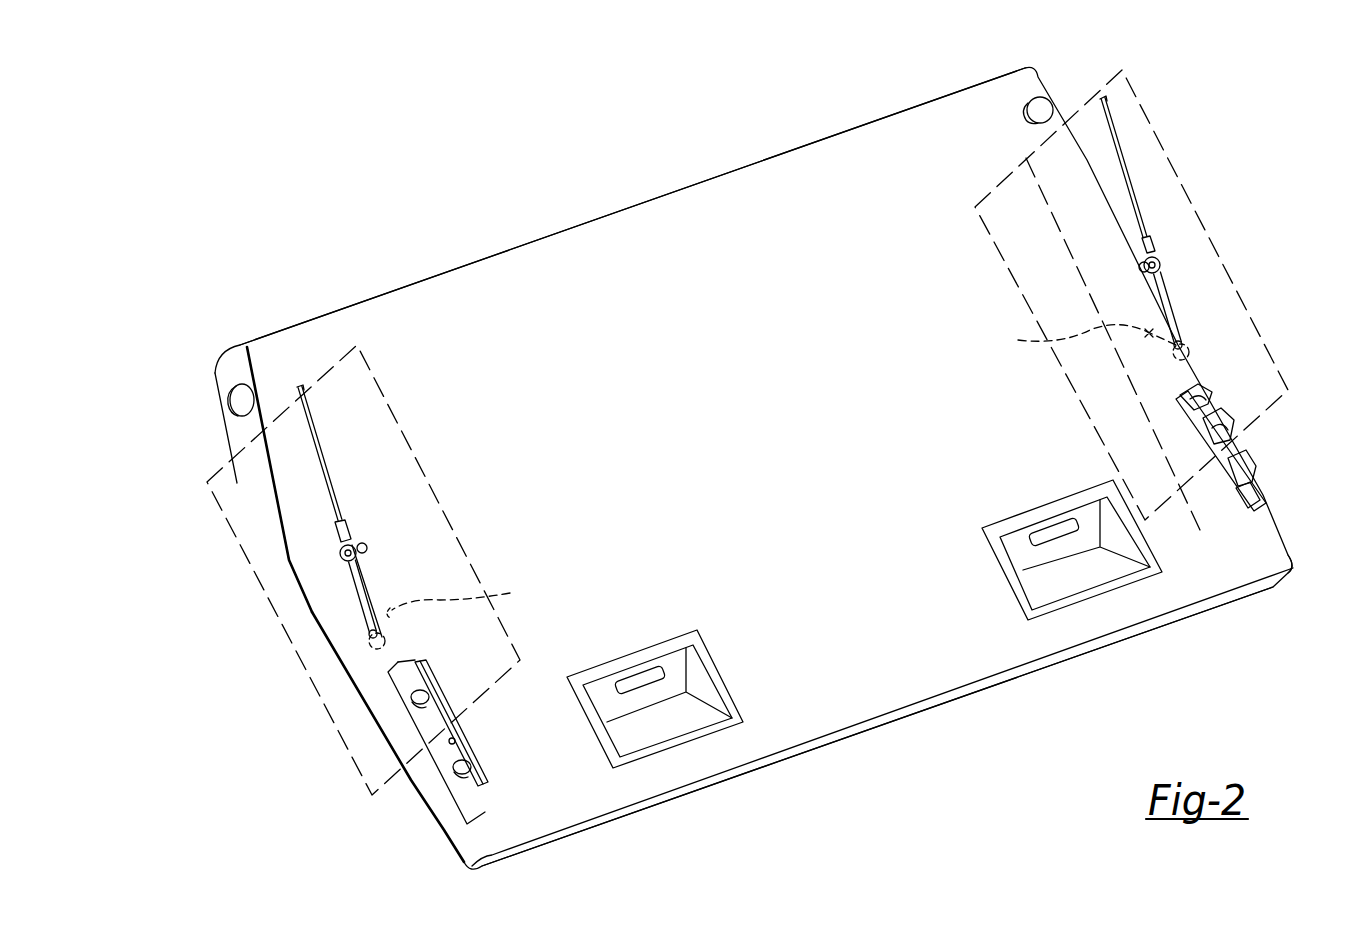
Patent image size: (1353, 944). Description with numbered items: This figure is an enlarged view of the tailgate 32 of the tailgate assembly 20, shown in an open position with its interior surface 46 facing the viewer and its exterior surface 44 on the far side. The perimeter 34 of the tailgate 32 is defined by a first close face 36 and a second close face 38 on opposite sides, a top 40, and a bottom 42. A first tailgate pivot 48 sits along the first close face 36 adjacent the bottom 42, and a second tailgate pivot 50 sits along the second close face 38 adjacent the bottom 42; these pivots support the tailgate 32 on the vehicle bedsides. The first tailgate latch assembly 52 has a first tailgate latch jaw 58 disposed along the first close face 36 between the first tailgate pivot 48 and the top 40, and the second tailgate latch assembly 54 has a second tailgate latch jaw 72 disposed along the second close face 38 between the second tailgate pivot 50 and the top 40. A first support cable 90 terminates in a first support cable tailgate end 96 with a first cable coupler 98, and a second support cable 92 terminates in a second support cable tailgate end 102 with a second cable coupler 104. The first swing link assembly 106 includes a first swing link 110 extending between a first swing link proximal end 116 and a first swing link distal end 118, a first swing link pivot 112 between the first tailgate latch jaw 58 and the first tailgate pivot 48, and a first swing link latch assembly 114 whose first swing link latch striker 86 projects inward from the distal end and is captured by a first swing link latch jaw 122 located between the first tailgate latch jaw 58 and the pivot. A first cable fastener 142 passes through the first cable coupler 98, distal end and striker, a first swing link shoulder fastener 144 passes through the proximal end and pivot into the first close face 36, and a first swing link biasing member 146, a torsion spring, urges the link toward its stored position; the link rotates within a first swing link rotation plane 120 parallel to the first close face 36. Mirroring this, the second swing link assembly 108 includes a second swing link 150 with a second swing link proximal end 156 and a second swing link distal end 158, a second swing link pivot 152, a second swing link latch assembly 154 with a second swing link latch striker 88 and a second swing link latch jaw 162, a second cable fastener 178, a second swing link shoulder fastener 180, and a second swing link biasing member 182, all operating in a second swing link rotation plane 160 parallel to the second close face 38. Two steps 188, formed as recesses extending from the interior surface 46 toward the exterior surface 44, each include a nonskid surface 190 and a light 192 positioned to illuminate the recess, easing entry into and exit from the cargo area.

The tailgate assembly 20 is at (374, 172).
The tailgate 32 is at (680, 818).
The perimeter 34 is at (1294, 577).
The first close face 36 is at (272, 468).
The second close face 38 is at (1057, 183).
The top 40 is at (903, 710).
The bottom 42 is at (462, 262).
The exterior surface 44 is at (378, 747).
The interior surface 46 is at (794, 282).
The first tailgate pivot 48 is at (224, 358).
The second tailgate pivot 50 is at (1027, 109).
The first tailgate latch assembly 52 is at (445, 796).
The second tailgate latch assembly 54 is at (1264, 468).
The first tailgate latch jaw 58 is at (470, 772).
The second tailgate latch jaw 72 is at (1245, 506).
The first swing link latch striker 86 is at (367, 551).
The second swing link latch striker 88 is at (1140, 268).
The first support cable 90 is at (318, 446).
The second support cable 92 is at (1124, 164).
The first support cable tailgate end 96 is at (345, 515).
The first cable coupler 98 is at (351, 538).
The second support cable tailgate end 102 is at (1152, 228).
The second cable coupler 104 is at (1152, 245).
The first swing link assembly 106 is at (395, 580).
The second swing link assembly 108 is at (1118, 355).
The first swing link 110 is at (360, 588).
The first swing link pivot 112 is at (383, 637).
The first swing link latch assembly 114 is at (402, 702).
The first swing link proximal end 116 is at (373, 632).
The first swing link distal end 118 is at (350, 567).
The first swing link rotation plane 120 is at (236, 513).
The first swing link latch jaw 122 is at (437, 708).
The first cable fastener 142 is at (341, 554).
The first swing link shoulder fastener 144 is at (385, 628).
The first swing link biasing member 146 is at (464, 598).
The second swing link 150 is at (1157, 288).
The second swing link pivot 152 is at (1170, 351).
The second swing link latch assembly 154 is at (1216, 390).
The second swing link proximal end 156 is at (1188, 317).
The second swing link distal end 158 is at (1164, 286).
The second swing link rotation plane 160 is at (1130, 116).
The second swing link latch jaw 162 is at (1212, 433).
The second cable fastener 178 is at (1167, 267).
The second swing link shoulder fastener 180 is at (1193, 339).
The second swing link biasing member 182 is at (1080, 338).
The steps 188 is at (722, 628).
The nonskid surface 190 is at (688, 726).
The light 192 is at (644, 682).